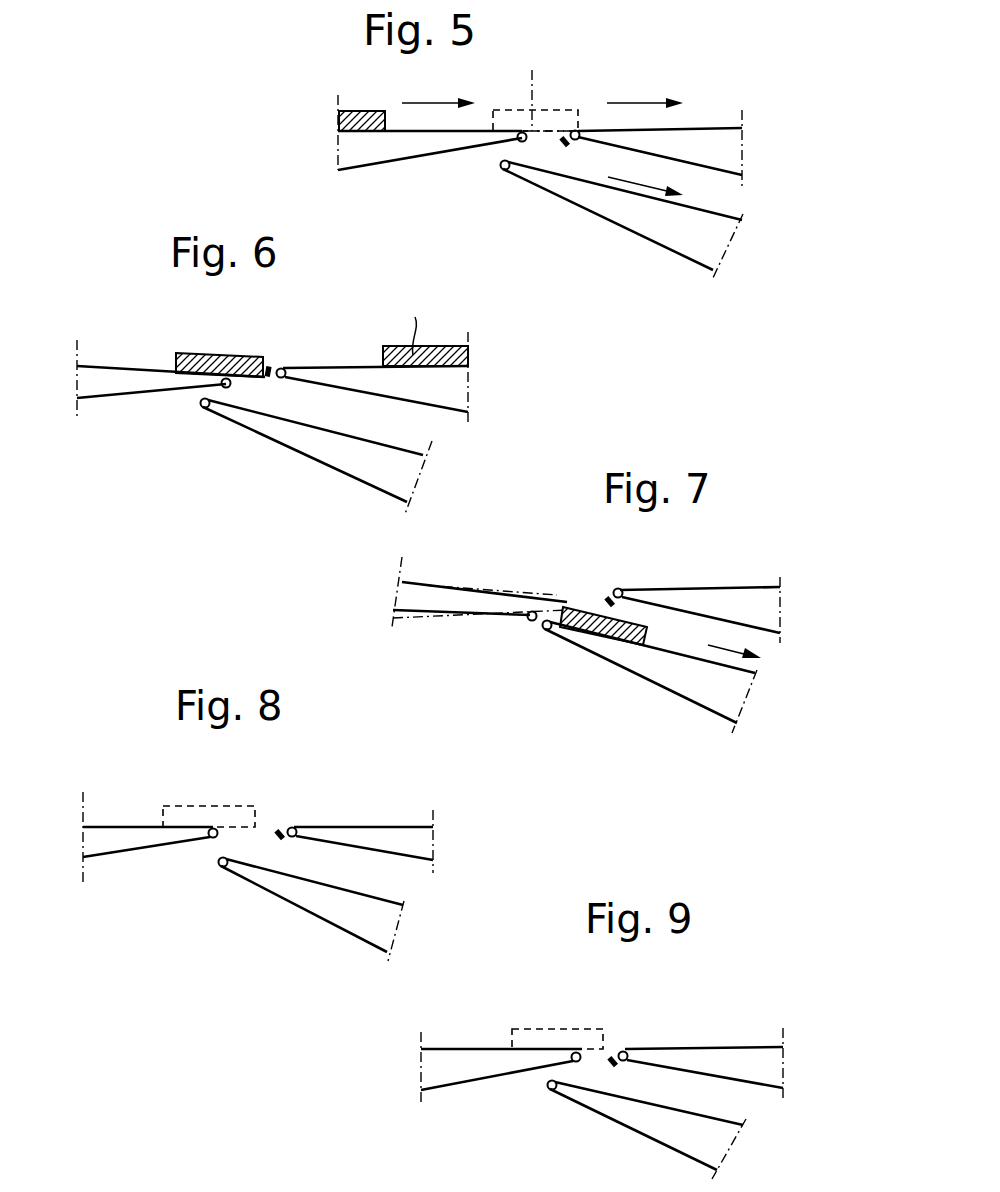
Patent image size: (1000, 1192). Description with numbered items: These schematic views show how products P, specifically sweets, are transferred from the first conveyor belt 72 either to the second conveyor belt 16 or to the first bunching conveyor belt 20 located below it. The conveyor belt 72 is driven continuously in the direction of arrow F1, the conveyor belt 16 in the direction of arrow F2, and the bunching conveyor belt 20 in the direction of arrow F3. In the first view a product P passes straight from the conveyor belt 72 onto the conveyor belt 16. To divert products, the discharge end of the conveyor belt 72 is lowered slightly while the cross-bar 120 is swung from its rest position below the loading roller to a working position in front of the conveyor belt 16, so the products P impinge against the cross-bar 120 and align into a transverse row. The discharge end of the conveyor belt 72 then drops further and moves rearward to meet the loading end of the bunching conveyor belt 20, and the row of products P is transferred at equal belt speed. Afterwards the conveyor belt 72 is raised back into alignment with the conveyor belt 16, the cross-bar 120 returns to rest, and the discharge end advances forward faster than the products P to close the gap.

In FIG. 5, the conveyor belt 16 is at (707, 127).
In FIG. 6, the conveyor belt 16 is at (327, 365).
In FIG. 7, the conveyor belt 16 is at (688, 588).
In FIG. 8, the conveyor belt 16 is at (363, 827).
In FIG. 9, the conveyor belt 16 is at (707, 1048).
In FIG. 5, the first bunching conveyor belt 20 is at (693, 206).
In FIG. 6, the first bunching conveyor belt 20 is at (345, 431).
In FIG. 7, the first bunching conveyor belt 20 is at (678, 646).
In FIG. 8, the first bunching conveyor belt 20 is at (355, 890).
In FIG. 9, the first bunching conveyor belt 20 is at (670, 1110).
In FIG. 5, the endless conveyor belt 72 is at (402, 135).
In FIG. 6, the endless conveyor belt 72 is at (113, 366).
In FIG. 7, the endless conveyor belt 72 is at (462, 598).
In FIG. 8, the endless conveyor belt 72 is at (113, 827).
In FIG. 9, the endless conveyor belt 72 is at (453, 1049).
In FIG. 5, the cross-bar 120 is at (556, 158).
In FIG. 6, the cross-bar 120 is at (269, 362).
In FIG. 7, the cross-bar 120 is at (603, 586).
In FIG. 8, the cross-bar 120 is at (274, 820).
In FIG. 9, the cross-bar 120 is at (609, 1045).
In FIG. 5, the products P is at (362, 112).
In FIG. 6, the products P is at (210, 362).
In FIG. 7, the products P is at (580, 605).
In FIG. 8, the products P is at (207, 812).
In FIG. 9, the products P is at (550, 1030).
In FIG. 5, the arrow F1 is at (438, 90).
In FIG. 5, the arrow F2 is at (645, 90).
In FIG. 5, the arrow F3 is at (645, 176).